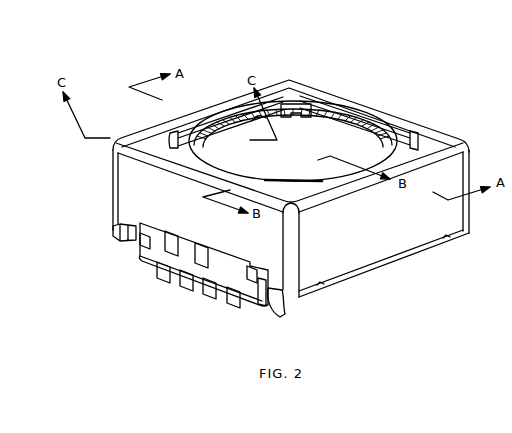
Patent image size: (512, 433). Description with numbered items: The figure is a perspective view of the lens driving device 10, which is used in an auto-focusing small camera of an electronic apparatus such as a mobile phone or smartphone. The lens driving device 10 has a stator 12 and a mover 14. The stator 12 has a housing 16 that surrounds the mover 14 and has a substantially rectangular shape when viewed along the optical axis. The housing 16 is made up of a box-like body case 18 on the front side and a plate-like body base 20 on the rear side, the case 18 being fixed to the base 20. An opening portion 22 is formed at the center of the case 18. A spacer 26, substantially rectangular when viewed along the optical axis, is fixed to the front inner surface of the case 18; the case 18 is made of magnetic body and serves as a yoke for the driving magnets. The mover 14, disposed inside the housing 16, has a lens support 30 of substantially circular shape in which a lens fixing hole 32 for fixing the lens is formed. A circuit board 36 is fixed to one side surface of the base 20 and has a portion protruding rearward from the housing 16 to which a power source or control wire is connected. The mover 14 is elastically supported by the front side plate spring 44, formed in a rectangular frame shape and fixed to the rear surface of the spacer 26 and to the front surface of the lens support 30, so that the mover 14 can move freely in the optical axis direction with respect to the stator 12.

The lens driving device 10 is at (294, 192).
The stator 12 is at (383, 102).
The mover 14 is at (335, 128).
The housing 16 is at (480, 157).
The case 18 is at (438, 137).
The base 20 is at (381, 265).
The opening portion 22 is at (296, 100).
The spacer 26 is at (396, 132).
The lens support 30 is at (206, 147).
The lens fixing hole 32 is at (231, 148).
The circuit board 36 is at (212, 287).
The front side plate spring 44 is at (323, 110).